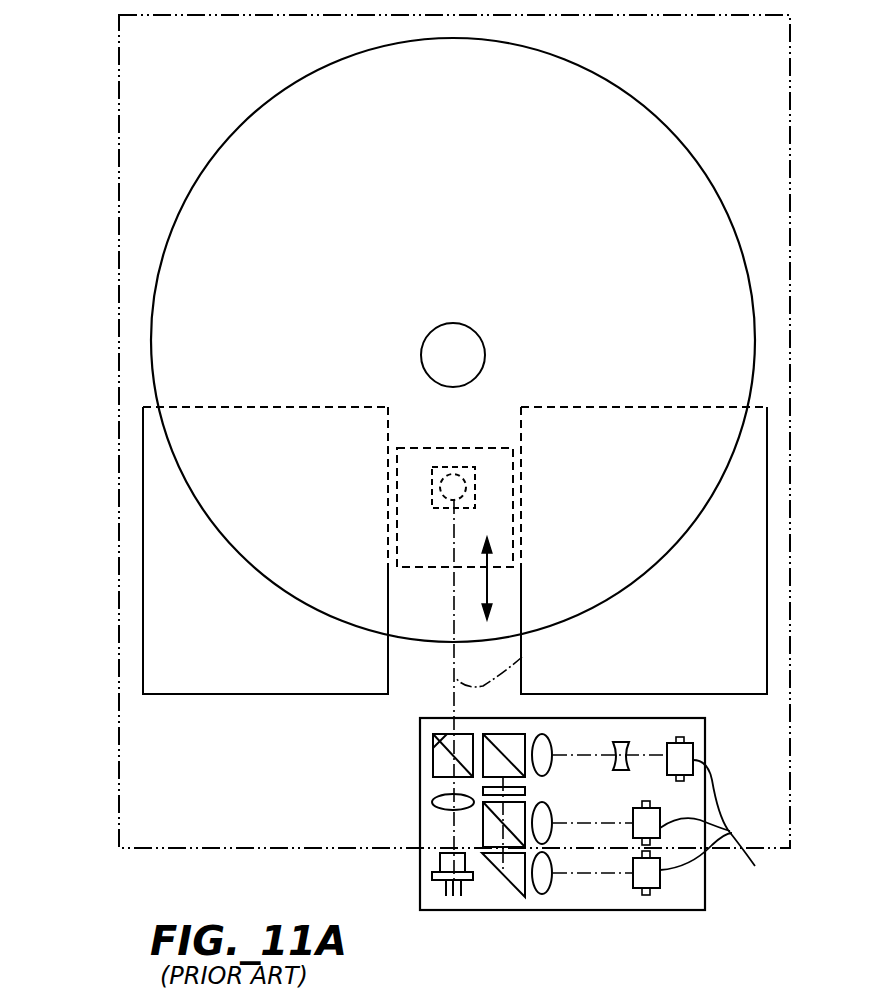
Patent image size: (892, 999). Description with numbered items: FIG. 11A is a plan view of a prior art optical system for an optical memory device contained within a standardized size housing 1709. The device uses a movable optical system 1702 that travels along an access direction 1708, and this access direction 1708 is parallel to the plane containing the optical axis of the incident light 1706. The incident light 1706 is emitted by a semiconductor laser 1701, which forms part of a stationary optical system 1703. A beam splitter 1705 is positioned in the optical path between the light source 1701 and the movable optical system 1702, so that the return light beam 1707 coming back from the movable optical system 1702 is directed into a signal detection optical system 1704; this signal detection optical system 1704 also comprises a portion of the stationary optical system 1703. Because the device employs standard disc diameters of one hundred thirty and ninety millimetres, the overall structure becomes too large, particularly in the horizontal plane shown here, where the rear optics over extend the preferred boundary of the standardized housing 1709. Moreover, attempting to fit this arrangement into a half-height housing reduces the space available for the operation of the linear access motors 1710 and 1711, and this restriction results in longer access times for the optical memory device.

The semiconductor laser 1701 is at (440, 860).
The movable optical system 1702 is at (458, 448).
The stationary optical system 1703 is at (420, 780).
The signal detection optical system 1704 is at (733, 819).
The beam splitter 1705 is at (440, 745).
The incident light 1706 is at (521, 664).
The return light beam 1707 is at (563, 755).
The access direction 1708 is at (490, 592).
The standardized size housing 1709 is at (119, 566).
The linear access motor 1710 is at (143, 617).
The linear access motor 1711 is at (767, 553).